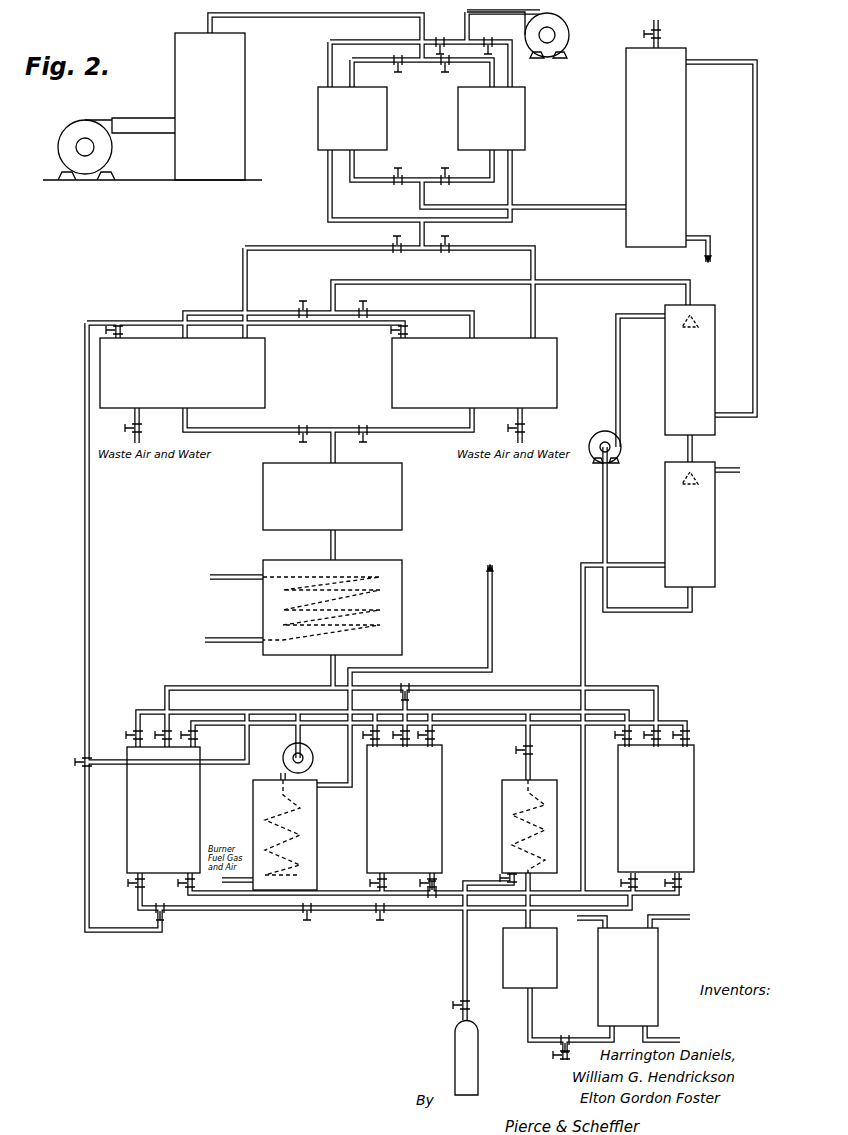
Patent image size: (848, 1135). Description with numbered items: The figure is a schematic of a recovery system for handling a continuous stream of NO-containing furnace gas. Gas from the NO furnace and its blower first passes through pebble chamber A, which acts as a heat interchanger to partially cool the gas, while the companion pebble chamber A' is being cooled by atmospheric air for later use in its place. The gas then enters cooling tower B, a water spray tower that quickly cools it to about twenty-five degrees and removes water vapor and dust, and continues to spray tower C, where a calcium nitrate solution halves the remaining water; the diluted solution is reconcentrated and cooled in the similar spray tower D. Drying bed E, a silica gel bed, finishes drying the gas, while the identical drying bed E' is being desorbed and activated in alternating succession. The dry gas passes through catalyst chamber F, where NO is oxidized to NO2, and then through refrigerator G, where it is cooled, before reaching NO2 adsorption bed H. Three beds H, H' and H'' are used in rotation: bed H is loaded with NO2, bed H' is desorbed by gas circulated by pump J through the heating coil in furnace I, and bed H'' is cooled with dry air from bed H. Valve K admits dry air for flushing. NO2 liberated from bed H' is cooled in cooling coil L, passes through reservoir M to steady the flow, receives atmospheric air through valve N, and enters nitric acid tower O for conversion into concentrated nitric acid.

The pebble chamber A is at (364, 118).
The pebble chamber A' is at (506, 118).
The cooling tower B is at (686, 105).
The spray tower C is at (715, 343).
The spray tower D is at (715, 518).
The drying bed E is at (195, 373).
The drying bed E' is at (488, 373).
The catalyst chamber F is at (402, 508).
The refrigerator G is at (402, 603).
The NO2 adsorption bed H is at (149, 810).
The NO2 adsorption bed H' is at (419, 809).
The NO2 adsorption bed H'' is at (674, 808).
The furnace I is at (253, 820).
The gas-circulating pump J is at (283, 760).
The valve K is at (440, 878).
The cooling coil L is at (502, 820).
The reservoir M is at (557, 958).
The valve N is at (570, 1035).
The nitric acid tower O is at (658, 952).